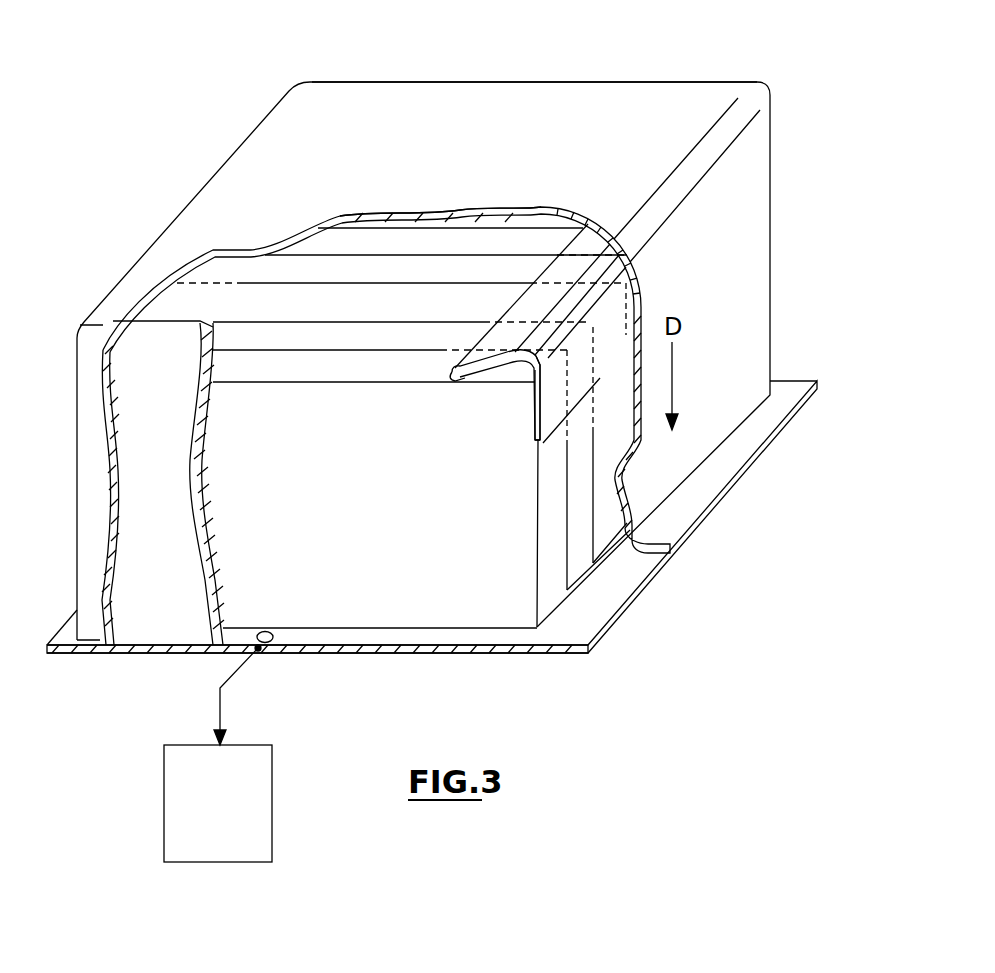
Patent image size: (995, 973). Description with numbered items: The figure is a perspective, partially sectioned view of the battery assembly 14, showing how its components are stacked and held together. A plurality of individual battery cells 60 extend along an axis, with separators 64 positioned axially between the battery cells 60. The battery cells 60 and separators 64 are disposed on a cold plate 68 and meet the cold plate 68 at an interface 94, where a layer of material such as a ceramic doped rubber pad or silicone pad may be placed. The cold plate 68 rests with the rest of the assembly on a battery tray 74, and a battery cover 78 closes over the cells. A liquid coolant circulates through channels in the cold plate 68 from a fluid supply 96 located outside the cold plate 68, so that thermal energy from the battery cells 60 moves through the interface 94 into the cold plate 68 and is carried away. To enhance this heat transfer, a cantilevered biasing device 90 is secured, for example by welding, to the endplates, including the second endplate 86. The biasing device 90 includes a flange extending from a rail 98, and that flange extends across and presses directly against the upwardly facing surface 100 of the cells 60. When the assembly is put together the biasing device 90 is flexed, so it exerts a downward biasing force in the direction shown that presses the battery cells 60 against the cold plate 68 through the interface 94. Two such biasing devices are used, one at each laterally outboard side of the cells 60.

The battery assembly 14 is at (773, 101).
The battery cover 78 is at (387, 103).
The battery cells 60 is at (440, 240).
The separators 64 is at (493, 253).
The upwardly facing surface 100 is at (523, 267).
The biasing device 90 is at (620, 301).
The fluid supply 96 is at (205, 843).
The rail 98 is at (540, 420).
The second endplate 86 is at (158, 623).
The interface 94 is at (352, 622).
The cold plate 68 is at (440, 640).
The battery tray 74 is at (520, 655).